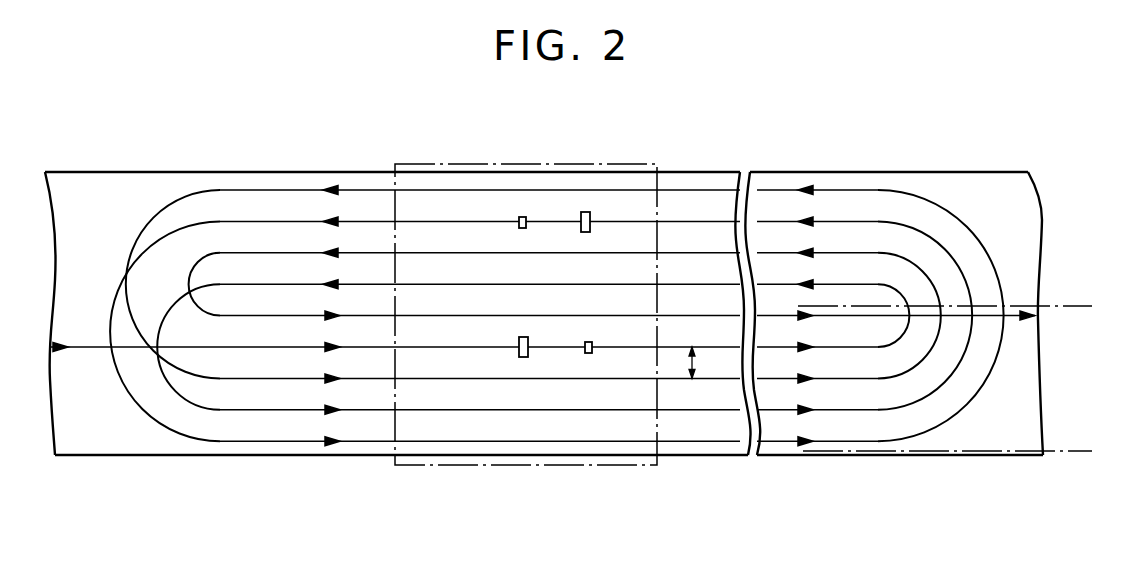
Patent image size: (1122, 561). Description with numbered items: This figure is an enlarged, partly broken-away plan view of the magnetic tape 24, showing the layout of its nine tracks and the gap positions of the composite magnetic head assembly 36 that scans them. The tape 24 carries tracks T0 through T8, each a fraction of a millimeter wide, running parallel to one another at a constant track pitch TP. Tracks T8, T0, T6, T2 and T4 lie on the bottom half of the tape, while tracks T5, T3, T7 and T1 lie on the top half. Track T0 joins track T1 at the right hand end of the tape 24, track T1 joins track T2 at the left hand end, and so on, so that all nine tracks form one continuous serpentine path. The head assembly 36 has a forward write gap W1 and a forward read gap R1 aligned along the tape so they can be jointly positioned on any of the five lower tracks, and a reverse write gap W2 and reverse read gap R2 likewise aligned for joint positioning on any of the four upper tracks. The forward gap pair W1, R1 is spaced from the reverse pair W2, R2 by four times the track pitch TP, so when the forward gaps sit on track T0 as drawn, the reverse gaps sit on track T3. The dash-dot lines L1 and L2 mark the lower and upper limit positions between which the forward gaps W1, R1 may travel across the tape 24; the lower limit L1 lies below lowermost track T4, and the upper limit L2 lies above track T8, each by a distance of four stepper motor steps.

The magnetic tape 24 is at (713, 171).
The composite magnetic head assembly 36 is at (542, 164).
The forward read gap R1 is at (592, 352).
The reverse read gap R2 is at (530, 206).
The forward write gap W1 is at (528, 354).
The reverse write gap W2 is at (598, 205).
The track pitch TP is at (692, 362).
The track T0 is at (278, 348).
The track T1 is at (278, 285).
The track T2 is at (278, 411).
The track T3 is at (278, 222).
The track T4 is at (277, 442).
The track T5 is at (278, 191).
The track T6 is at (278, 379).
The track T7 is at (278, 254).
The track T8 is at (278, 317).
The first or lower limit position L1 is at (1087, 452).
The second or upper limit position L2 is at (1086, 311).